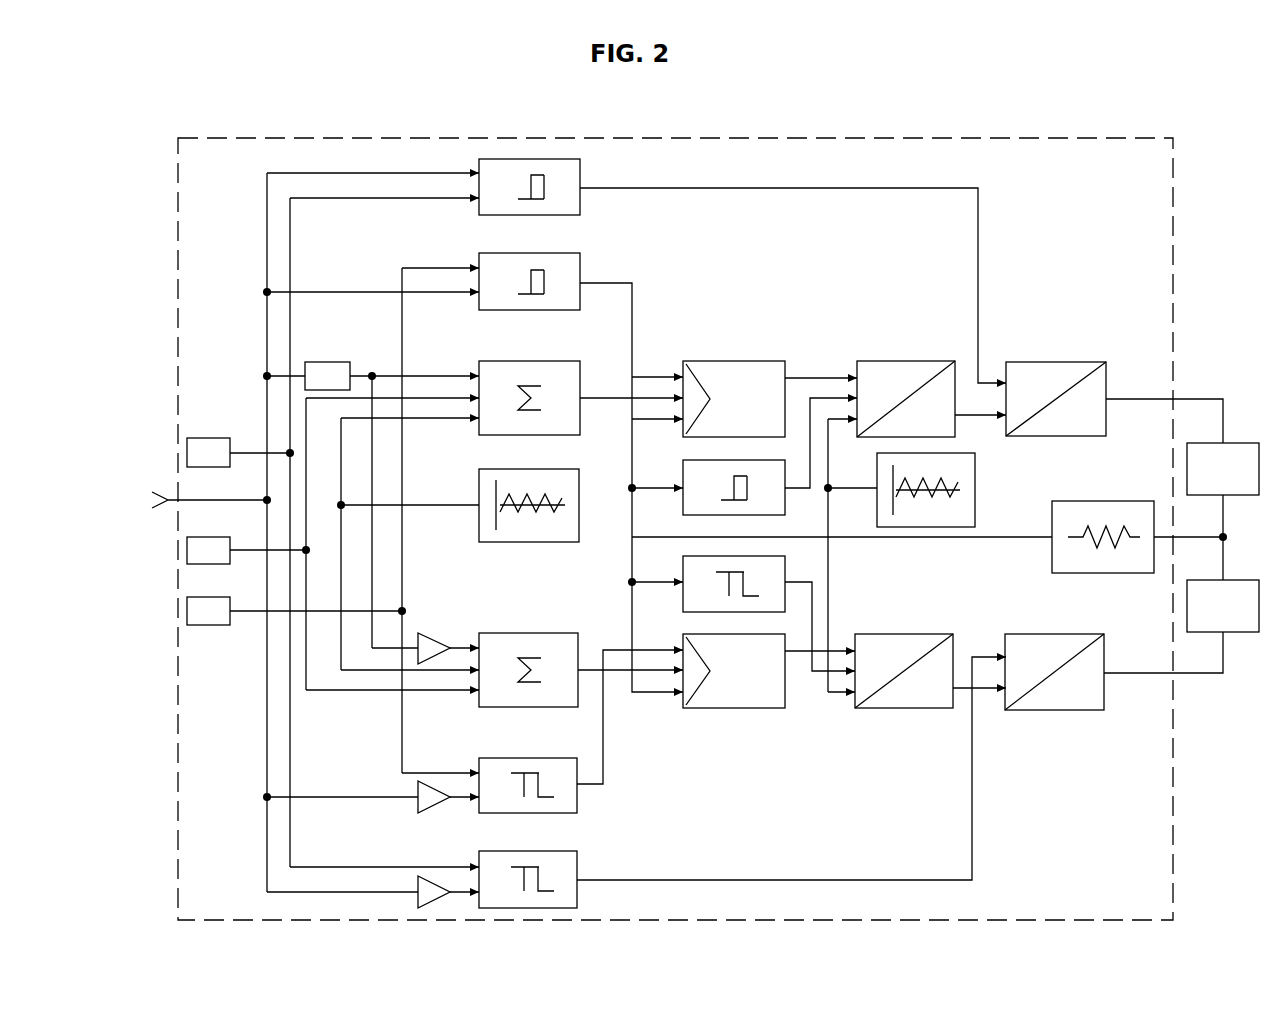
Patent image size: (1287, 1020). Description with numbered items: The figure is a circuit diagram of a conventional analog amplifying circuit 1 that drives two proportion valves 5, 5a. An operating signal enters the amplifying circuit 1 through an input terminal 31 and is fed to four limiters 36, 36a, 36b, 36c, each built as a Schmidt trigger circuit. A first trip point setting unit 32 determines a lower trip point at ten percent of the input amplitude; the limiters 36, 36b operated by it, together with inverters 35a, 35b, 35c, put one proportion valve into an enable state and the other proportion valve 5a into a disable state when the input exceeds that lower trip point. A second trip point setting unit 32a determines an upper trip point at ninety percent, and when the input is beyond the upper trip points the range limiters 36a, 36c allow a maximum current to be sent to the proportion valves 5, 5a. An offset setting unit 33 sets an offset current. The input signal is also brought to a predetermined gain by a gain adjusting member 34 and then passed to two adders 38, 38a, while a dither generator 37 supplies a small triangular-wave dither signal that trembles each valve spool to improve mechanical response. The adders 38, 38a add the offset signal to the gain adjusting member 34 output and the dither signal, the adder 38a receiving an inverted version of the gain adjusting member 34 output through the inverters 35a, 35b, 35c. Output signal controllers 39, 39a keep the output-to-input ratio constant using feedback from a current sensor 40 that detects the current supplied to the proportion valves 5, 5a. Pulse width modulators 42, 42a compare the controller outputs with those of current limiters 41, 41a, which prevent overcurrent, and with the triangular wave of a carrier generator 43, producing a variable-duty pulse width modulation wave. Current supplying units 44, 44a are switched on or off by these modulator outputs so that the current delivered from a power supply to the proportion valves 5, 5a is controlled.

The amplifying circuit 1 is at (1175, 236).
The input terminal 31 is at (194, 502).
The first trip point setting unit 32 is at (205, 438).
The offset setting unit 33 is at (223, 525).
The second trip point setting unit 32a is at (208, 625).
The gain adjusting member 34 is at (322, 362).
The inverter 35a is at (430, 812).
The inverter 35b is at (418, 902).
The inverter 35c is at (450, 620).
The limiter 36 is at (582, 170).
The range limiter 36a is at (582, 264).
The limiter 36b is at (579, 800).
The range limiter 36c is at (579, 862).
The dither generator 37 is at (530, 542).
The adder 38 is at (584, 362).
The adder 38a is at (533, 633).
The output signal controller 39 is at (722, 361).
The output signal controller 39a is at (725, 708).
The current sensor 40 is at (1107, 491).
The current limiter 41 is at (775, 515).
The current limiter 41a is at (765, 556).
The pulse width modulator 42 is at (905, 361).
The pulse width modulator 42a is at (908, 620).
The carrier generator 43 is at (975, 486).
The current supplying unit 44 is at (1057, 352).
The current supplying unit 44a is at (1047, 624).
The proportion valve 5 is at (1245, 443).
The proportion valve 5a is at (1240, 580).